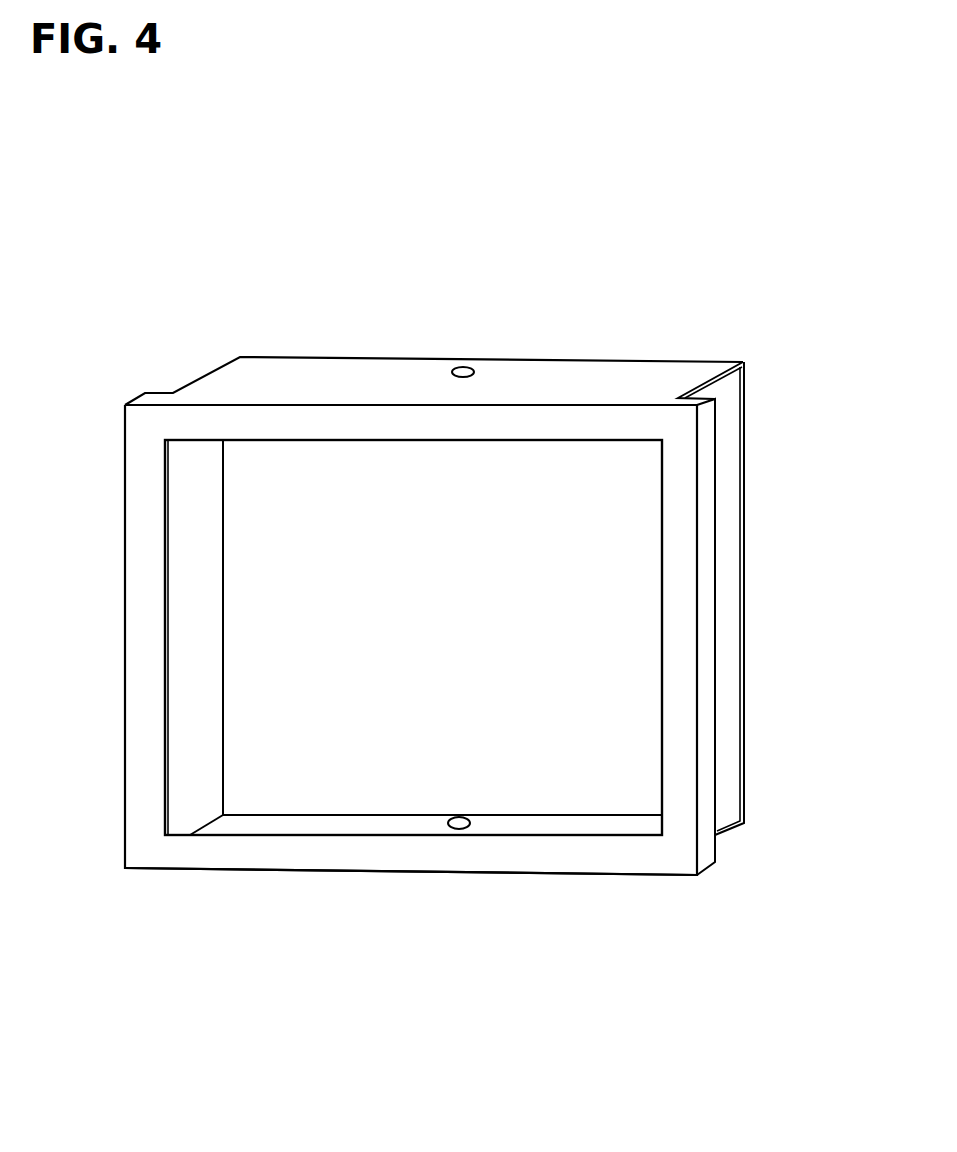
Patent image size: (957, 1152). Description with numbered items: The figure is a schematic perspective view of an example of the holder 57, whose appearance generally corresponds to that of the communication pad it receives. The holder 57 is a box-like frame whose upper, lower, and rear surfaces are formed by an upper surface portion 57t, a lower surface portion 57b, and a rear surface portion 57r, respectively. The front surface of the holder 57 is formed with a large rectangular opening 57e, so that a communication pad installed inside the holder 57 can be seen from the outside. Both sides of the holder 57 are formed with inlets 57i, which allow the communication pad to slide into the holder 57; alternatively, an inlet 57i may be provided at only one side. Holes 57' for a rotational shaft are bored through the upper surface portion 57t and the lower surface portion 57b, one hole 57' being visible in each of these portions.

The holder 57 is at (504, 590).
The holes 57' is at (470, 614).
The upper surface portion 57t is at (580, 373).
The rear surface portion 57r is at (745, 478).
The inlets 57i is at (218, 642).
The opening 57e is at (481, 647).
The lower surface portion 57b is at (730, 825).